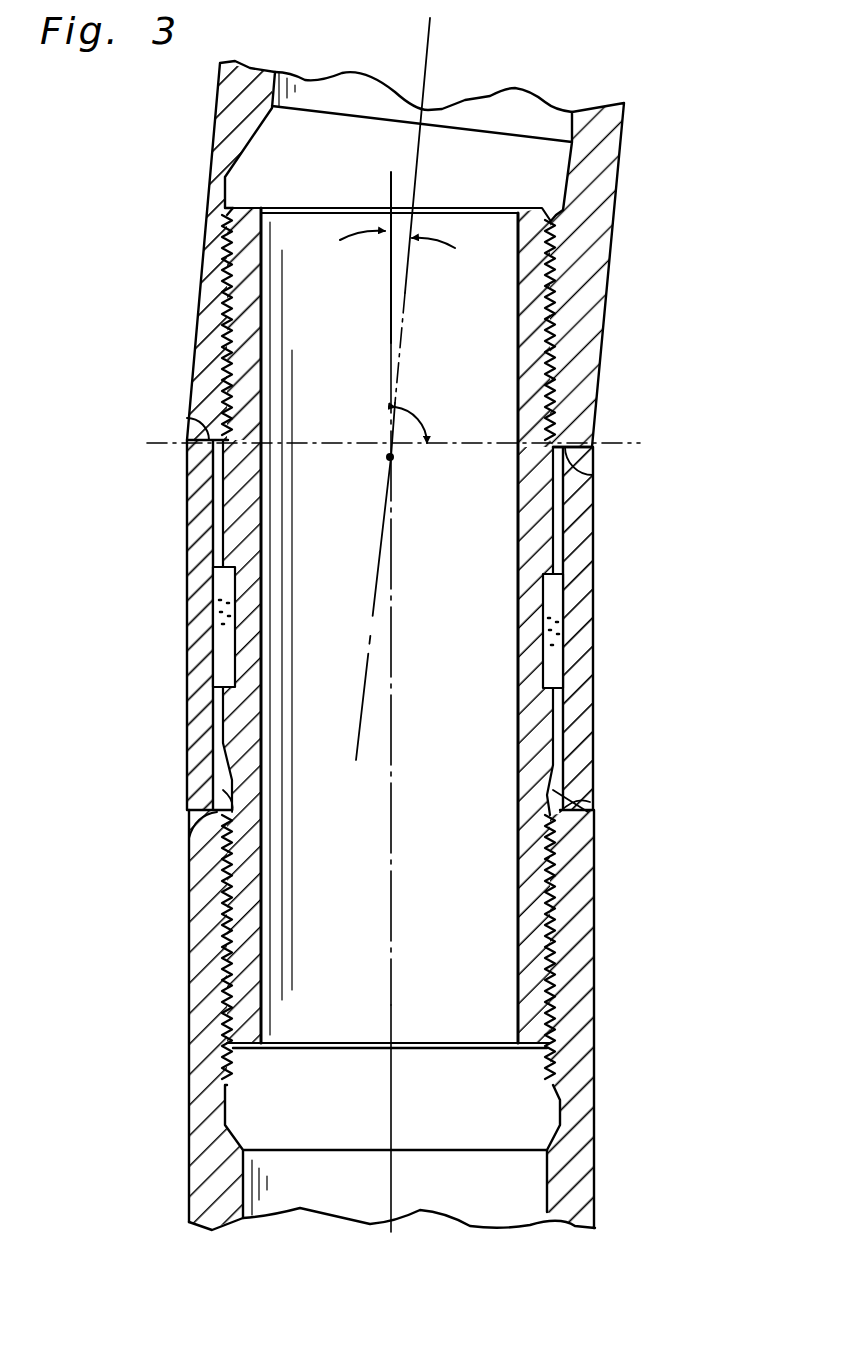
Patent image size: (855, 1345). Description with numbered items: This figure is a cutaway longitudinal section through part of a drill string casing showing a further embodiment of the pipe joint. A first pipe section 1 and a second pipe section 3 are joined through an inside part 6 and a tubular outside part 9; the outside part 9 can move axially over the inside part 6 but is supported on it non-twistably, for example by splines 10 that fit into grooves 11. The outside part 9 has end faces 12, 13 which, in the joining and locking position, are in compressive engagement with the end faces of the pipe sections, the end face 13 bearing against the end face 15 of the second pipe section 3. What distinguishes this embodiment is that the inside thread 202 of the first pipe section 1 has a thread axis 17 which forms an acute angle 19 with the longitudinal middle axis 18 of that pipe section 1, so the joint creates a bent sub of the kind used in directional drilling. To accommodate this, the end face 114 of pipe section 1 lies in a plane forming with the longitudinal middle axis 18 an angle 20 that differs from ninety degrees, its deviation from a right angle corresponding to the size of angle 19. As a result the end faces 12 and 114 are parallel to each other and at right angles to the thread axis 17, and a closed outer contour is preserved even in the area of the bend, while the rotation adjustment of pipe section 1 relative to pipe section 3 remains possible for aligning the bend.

The first pipe section 1 is at (600, 232).
The second pipe section 3 is at (594, 945).
The inside part 6 is at (259, 551).
The tubular outside part 9 is at (580, 630).
The splines 10 is at (580, 677).
The grooves 11 is at (557, 537).
The end face of outside part 12 is at (592, 465).
The end face of outside part 13 is at (592, 795).
The end face of second pipe section 15 is at (200, 826).
The thread axis 17 is at (389, 287).
The longitudinal middle axis 18 is at (418, 184).
The acute angle 19 is at (405, 242).
The angle 20 is at (417, 417).
The end face of pipe section 114 is at (188, 418).
The inside thread 202 is at (563, 352).